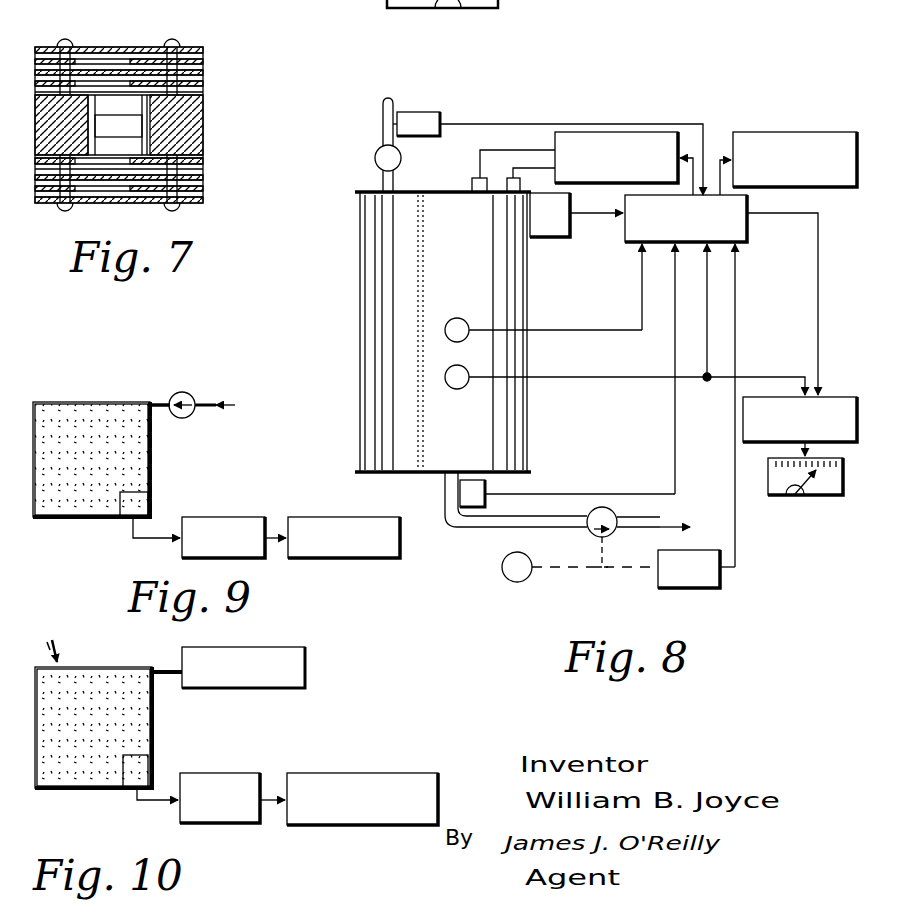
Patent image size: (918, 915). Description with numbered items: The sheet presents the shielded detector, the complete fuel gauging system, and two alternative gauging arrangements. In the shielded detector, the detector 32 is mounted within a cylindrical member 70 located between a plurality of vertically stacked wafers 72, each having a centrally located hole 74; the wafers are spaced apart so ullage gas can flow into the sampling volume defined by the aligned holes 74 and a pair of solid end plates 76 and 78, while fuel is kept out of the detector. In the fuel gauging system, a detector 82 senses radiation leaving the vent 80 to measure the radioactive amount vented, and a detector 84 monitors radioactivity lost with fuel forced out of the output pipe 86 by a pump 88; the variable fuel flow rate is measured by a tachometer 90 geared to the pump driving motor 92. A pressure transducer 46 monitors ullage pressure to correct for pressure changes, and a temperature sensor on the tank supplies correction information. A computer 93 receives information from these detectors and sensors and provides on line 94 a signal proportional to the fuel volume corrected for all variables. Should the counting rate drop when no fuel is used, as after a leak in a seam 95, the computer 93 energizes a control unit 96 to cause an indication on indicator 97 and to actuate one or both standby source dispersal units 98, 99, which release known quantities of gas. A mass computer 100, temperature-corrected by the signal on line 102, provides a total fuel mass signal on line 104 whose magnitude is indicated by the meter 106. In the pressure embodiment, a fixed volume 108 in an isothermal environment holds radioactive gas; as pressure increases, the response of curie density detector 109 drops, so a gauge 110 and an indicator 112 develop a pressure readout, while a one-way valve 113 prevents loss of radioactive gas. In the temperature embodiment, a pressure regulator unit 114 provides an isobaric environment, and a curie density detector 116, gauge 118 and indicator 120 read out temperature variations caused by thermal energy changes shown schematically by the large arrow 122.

In FIG. 7, the cylindrical member 70 is at (232, 108).
In FIG. 7, the detector 32 is at (130, 127).
In FIG. 7, the solid end plate 76 is at (123, 47).
In FIG. 7, the wafer 72 is at (198, 168).
In FIG. 7, the centrally located hole 74 is at (129, 190).
In FIG. 7, the solid end plate 78 is at (183, 203).
In FIG. 8, the vent 80 is at (385, 112).
In FIG. 8, the detector 82 is at (420, 112).
In FIG. 8, the standby source dispersal unit 99 is at (480, 178).
In FIG. 8, the standby source dispersal unit 98 is at (510, 193).
In FIG. 8, the control unit 96 is at (595, 132).
In FIG. 8, the indicator 97 is at (753, 132).
In FIG. 8, the computer 93 is at (624, 232).
In FIG. 8, the line 94 is at (818, 234).
In FIG. 8, the pressure transducer 46 is at (474, 300).
In FIG. 8, the line 102 is at (792, 372).
In FIG. 8, the mass computer 100 is at (848, 396).
In FIG. 8, the line 104 is at (800, 450).
In FIG. 8, the meter 106 is at (785, 496).
In FIG. 8, the seam 95 is at (426, 410).
In FIG. 8, the output pipe 86 is at (462, 531).
In FIG. 8, the detector 84 is at (487, 504).
In FIG. 8, the pump 88 is at (610, 513).
In FIG. 8, the pump driving motor 92 is at (502, 568).
In FIG. 8, the tachometer 90 is at (701, 588).
In FIG. 9, the fixed volume 108 is at (65, 402).
In FIG. 9, the one-way valve 113 is at (178, 392).
In FIG. 9, the curie density detector 109 is at (121, 506).
In FIG. 9, the gauge 110 is at (236, 517).
In FIG. 9, the indicator 112 is at (353, 517).
In FIG. 10, the large arrow 122 is at (58, 652).
In FIG. 10, the pressure regulator unit 114 is at (307, 672).
In FIG. 10, the curie density detector 116 is at (144, 757).
In FIG. 10, the gauge 118 is at (209, 774).
In FIG. 10, the indicator 120 is at (325, 774).